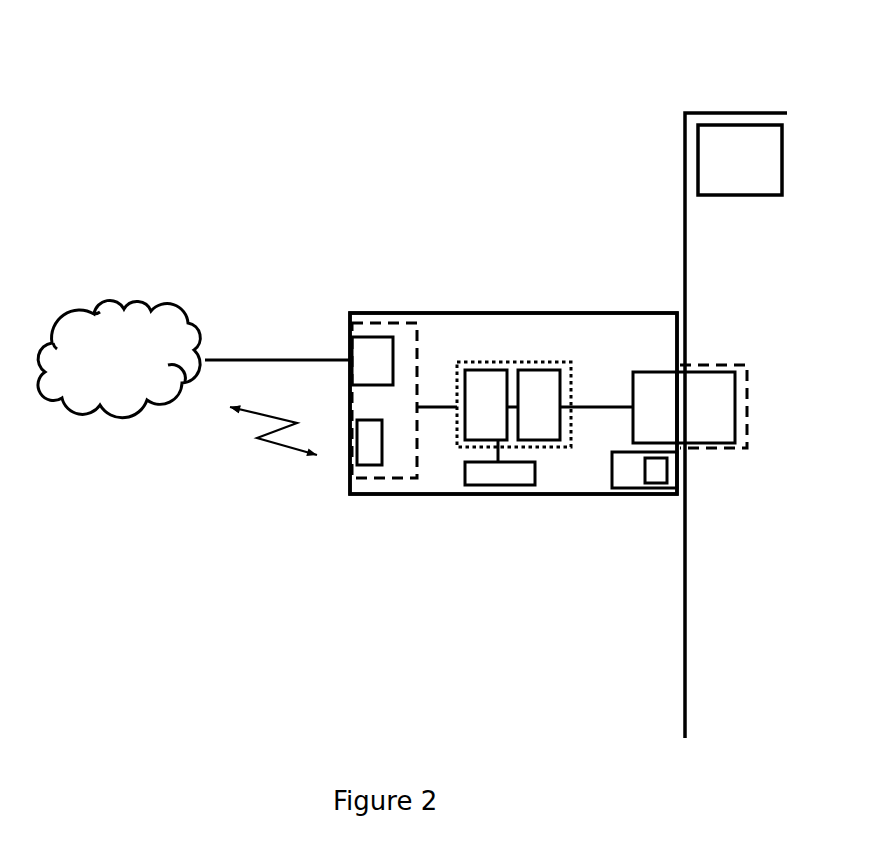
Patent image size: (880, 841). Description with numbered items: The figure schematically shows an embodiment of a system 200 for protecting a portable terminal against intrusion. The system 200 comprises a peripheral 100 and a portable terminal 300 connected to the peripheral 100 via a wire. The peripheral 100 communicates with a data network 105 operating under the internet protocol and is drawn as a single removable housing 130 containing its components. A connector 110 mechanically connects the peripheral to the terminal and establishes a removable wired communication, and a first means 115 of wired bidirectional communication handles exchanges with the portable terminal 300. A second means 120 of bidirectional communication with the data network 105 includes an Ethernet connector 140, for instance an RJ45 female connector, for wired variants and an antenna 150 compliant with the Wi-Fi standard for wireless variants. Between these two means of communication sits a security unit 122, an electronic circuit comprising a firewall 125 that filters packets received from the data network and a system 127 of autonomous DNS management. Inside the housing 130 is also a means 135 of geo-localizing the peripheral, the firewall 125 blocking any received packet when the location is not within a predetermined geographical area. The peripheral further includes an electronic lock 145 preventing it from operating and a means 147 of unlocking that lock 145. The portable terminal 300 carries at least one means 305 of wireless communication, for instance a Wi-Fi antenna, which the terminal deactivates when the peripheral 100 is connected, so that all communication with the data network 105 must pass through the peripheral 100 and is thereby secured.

The system 200 is at (562, 83).
The peripheral 100 is at (502, 298).
The data network 105 is at (125, 275).
The connector 110 is at (700, 432).
The first means of wired bidirectional communication 115 is at (655, 385).
The second means of bidirectional communication 120 is at (402, 338).
The security unit 122 is at (547, 450).
The firewall 125 is at (473, 423).
The system of autonomous DNS management 127 is at (533, 385).
The housing 130 is at (613, 313).
The means of geo-localizing 135 is at (500, 485).
The Ethernet connector 140 is at (357, 346).
The electronic lock 145 is at (633, 473).
The means of unlocking 147 is at (657, 477).
The antenna 150 is at (363, 430).
The portable terminal 300 is at (668, 153).
The means of wireless communication 305 is at (750, 182).